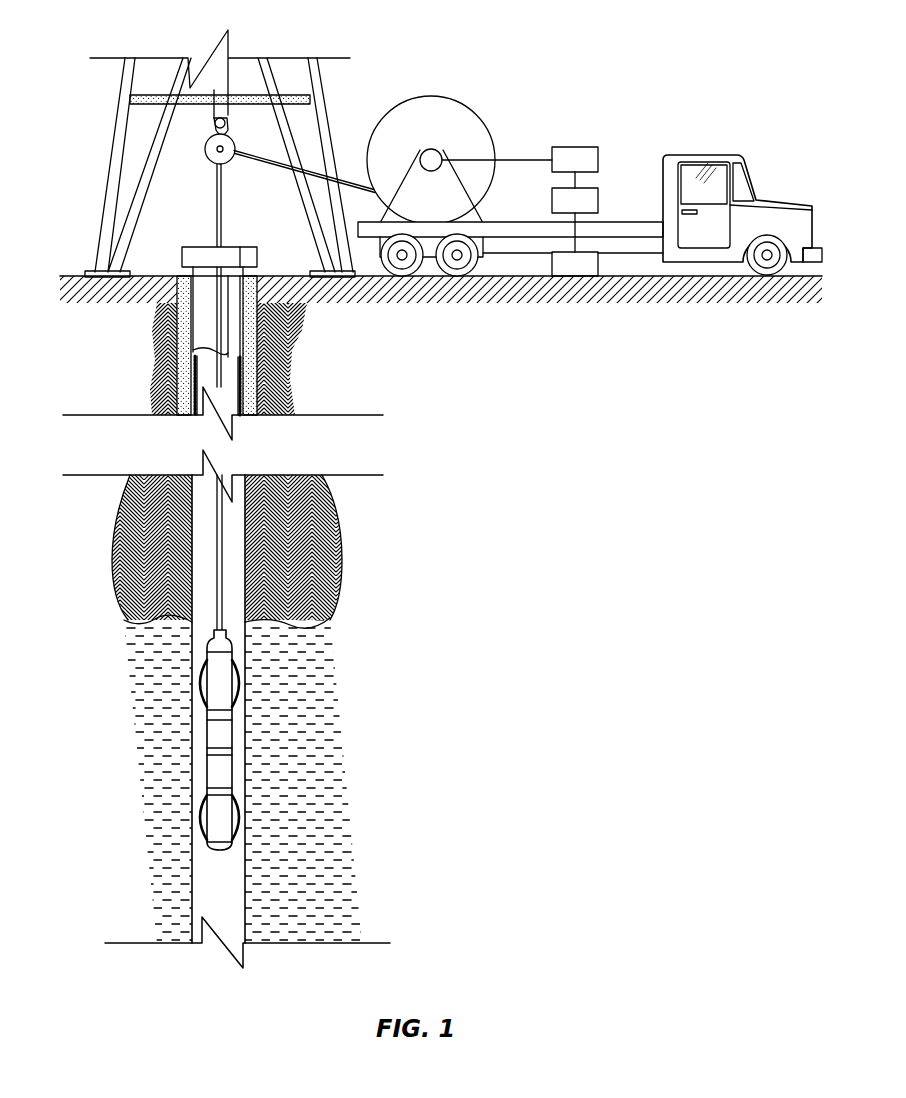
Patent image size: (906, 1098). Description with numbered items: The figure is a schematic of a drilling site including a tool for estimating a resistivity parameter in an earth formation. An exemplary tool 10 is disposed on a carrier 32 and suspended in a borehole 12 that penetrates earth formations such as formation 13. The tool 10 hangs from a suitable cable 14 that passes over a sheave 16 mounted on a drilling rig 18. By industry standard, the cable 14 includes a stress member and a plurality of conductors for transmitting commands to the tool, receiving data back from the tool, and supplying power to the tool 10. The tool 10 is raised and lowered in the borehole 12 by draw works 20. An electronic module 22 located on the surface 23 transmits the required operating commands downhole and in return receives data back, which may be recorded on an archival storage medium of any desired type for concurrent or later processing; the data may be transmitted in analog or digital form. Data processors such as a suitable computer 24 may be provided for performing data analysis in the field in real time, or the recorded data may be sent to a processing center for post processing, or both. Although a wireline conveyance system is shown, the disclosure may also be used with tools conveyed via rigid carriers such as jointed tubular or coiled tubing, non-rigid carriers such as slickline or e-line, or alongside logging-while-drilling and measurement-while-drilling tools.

The tool 10 is at (235, 736).
The borehole 12 is at (240, 540).
The earth formation 13 is at (370, 580).
The cable 14 is at (213, 222).
The sheave 16 is at (205, 148).
The drilling rig 18 is at (112, 102).
The draw works 20 is at (431, 96).
The electronic module 22 is at (587, 147).
The surface 23 is at (73, 276).
The computer 24 is at (587, 188).
The carrier 32 is at (232, 808).